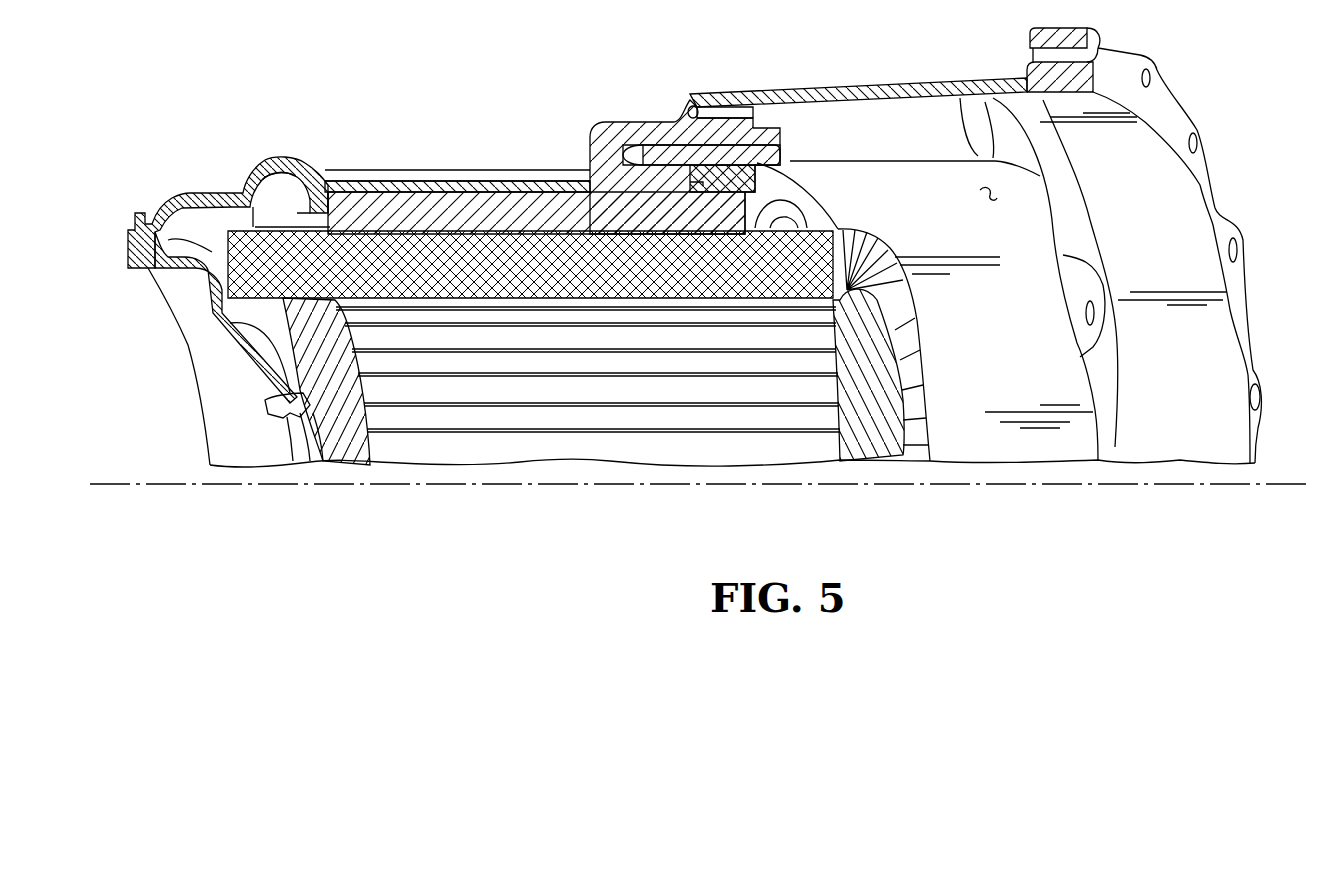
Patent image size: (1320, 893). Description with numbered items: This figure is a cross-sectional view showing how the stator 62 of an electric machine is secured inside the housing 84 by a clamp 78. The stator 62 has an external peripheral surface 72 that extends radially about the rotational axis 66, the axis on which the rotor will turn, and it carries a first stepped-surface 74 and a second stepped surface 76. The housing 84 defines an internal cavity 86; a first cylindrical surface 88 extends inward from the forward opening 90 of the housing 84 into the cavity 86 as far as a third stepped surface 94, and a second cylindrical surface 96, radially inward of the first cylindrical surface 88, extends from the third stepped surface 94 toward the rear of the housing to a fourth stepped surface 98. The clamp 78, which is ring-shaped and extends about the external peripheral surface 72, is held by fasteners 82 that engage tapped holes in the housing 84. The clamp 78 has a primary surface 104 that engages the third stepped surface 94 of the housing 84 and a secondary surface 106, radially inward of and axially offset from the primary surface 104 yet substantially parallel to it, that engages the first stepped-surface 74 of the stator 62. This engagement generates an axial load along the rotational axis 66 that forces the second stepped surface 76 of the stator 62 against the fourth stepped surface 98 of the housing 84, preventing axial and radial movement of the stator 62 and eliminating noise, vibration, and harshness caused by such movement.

The stator 62 is at (880, 237).
The rotational axis 66 is at (150, 484).
The external peripheral surface 72 is at (440, 192).
The first stepped-surface 74 is at (785, 217).
The second stepped surface 76 is at (295, 160).
The clamp 78 is at (744, 118).
The fasteners 82 is at (785, 150).
The housing 84 is at (978, 80).
The internal cavity 86 is at (1020, 327).
The first cylindrical surface 88 is at (993, 198).
The forward opening 90 is at (1210, 213).
The third stepped surface 94 is at (694, 112).
The second cylindrical surface 96 is at (385, 190).
The fourth stepped surface 98 is at (328, 182).
The primary surface 104 is at (660, 150).
The secondary surface 106 is at (755, 229).